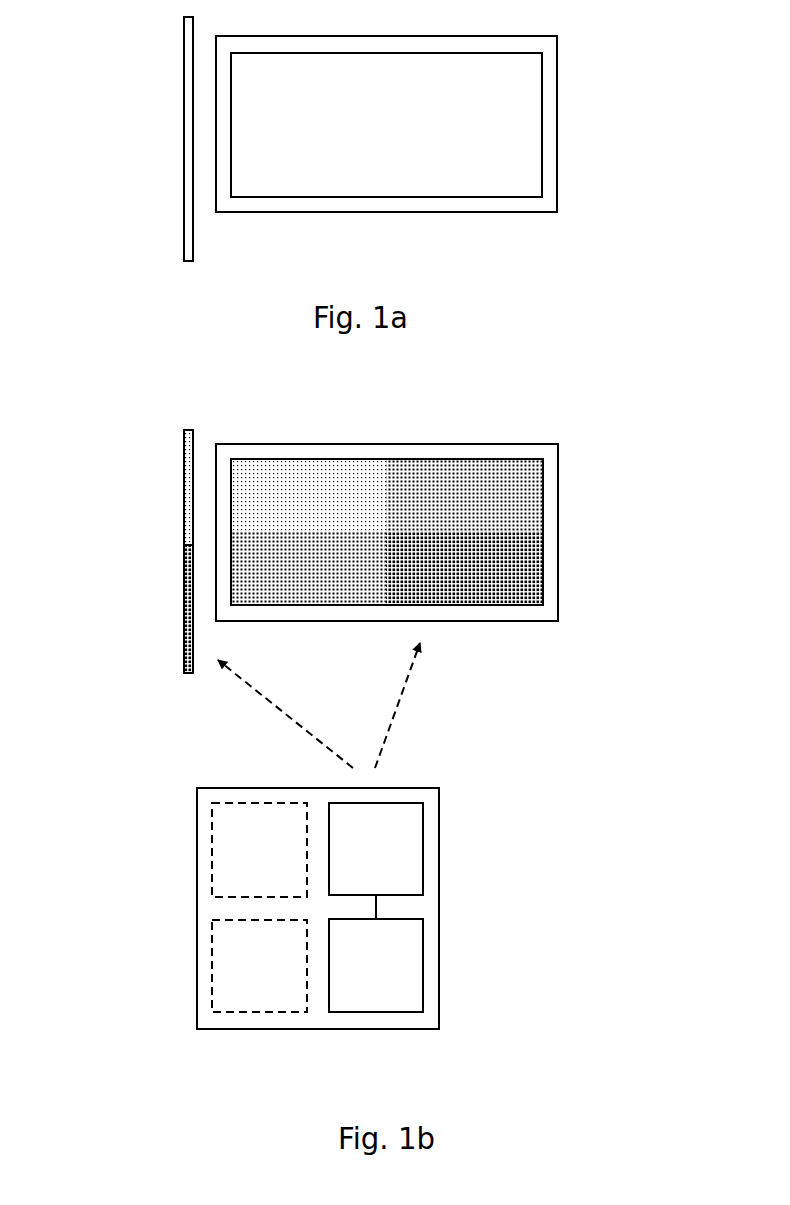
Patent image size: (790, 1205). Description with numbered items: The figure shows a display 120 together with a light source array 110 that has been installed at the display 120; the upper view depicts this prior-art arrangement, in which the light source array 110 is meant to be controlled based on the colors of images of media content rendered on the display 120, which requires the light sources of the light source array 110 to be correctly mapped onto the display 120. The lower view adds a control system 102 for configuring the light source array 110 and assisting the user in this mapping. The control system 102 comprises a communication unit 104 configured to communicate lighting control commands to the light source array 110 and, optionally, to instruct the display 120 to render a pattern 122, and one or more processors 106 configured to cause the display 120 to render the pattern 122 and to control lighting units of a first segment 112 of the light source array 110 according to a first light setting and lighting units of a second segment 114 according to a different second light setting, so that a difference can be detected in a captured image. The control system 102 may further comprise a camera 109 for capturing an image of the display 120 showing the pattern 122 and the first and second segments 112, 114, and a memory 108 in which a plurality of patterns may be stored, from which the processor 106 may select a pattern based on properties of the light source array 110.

In FIG. 1B, the control system 102 is at (438, 1017).
In FIG. 1B, the communication unit 104 is at (420, 842).
In FIG. 1B, the processor 106 is at (420, 969).
In FIG. 1B, the memory 108 is at (228, 969).
In FIG. 1B, the camera 109 is at (228, 858).
In FIG. 1A, the light source array 110 is at (183, 163).
In FIG. 1B, the light source array 110 is at (183, 656).
In FIG. 1B, the first segment 112 is at (183, 482).
In FIG. 1B, the second segment 114 is at (183, 589).
In FIG. 1A, the display 120 is at (550, 144).
In FIG. 1B, the display 120 is at (550, 563).
In FIG. 1B, the pattern 122 is at (524, 495).